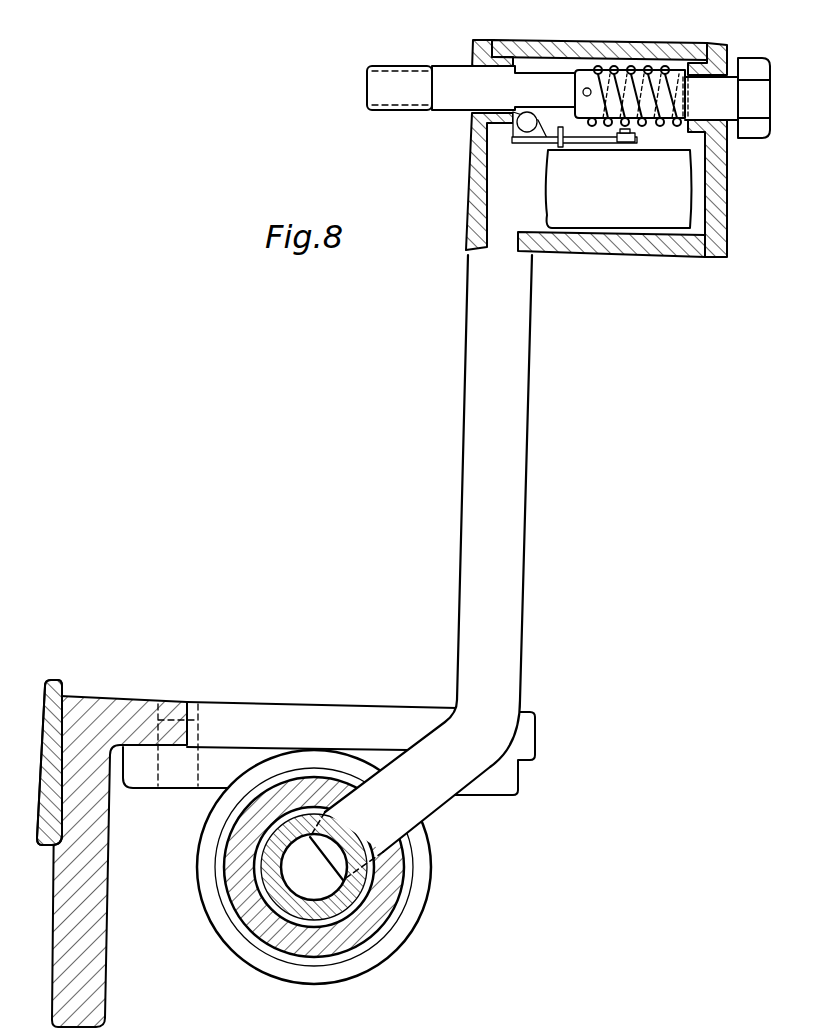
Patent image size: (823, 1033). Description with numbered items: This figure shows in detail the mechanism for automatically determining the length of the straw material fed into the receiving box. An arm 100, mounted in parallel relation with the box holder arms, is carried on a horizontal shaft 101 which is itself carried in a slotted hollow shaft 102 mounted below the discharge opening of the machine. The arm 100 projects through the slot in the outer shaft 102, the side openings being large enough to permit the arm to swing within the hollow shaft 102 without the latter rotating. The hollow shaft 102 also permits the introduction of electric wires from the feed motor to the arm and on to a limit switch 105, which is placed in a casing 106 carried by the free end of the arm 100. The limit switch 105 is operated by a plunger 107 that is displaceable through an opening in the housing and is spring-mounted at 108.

The arm 100 is at (485, 457).
The horizontal shaft 101 is at (300, 866).
The slotted hollow shaft 102 is at (357, 935).
The limit switch 105 is at (667, 218).
The casing 106 is at (593, 247).
The plunger 107 is at (457, 72).
The spring mounting 108 is at (650, 72).